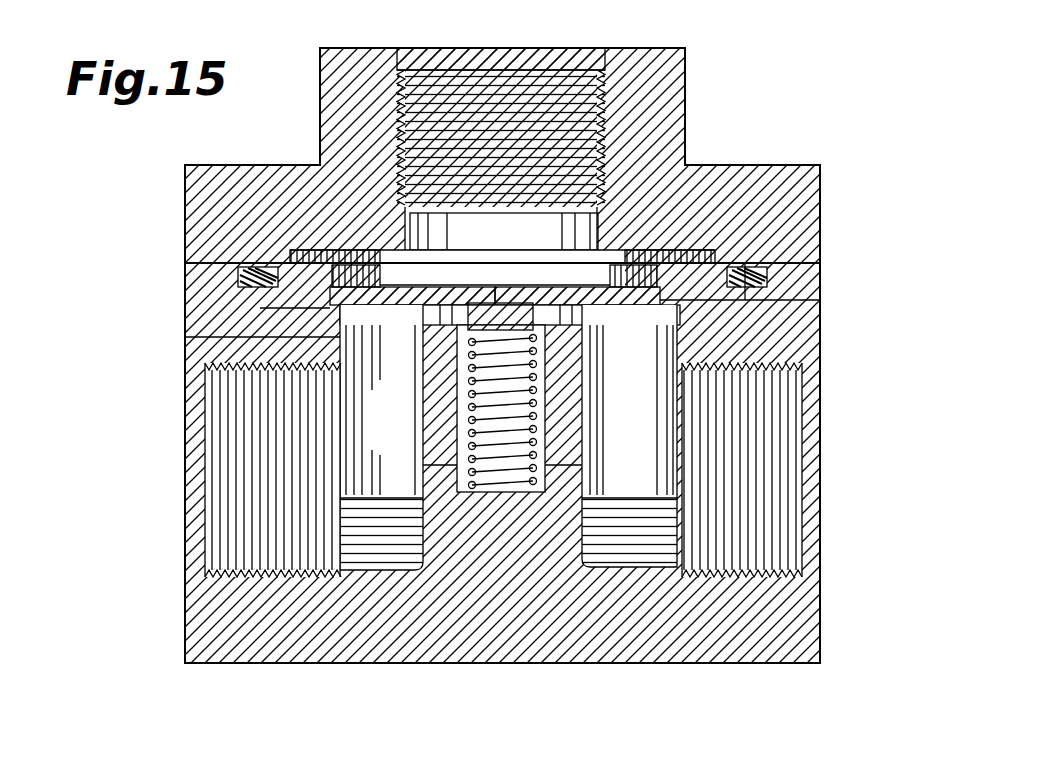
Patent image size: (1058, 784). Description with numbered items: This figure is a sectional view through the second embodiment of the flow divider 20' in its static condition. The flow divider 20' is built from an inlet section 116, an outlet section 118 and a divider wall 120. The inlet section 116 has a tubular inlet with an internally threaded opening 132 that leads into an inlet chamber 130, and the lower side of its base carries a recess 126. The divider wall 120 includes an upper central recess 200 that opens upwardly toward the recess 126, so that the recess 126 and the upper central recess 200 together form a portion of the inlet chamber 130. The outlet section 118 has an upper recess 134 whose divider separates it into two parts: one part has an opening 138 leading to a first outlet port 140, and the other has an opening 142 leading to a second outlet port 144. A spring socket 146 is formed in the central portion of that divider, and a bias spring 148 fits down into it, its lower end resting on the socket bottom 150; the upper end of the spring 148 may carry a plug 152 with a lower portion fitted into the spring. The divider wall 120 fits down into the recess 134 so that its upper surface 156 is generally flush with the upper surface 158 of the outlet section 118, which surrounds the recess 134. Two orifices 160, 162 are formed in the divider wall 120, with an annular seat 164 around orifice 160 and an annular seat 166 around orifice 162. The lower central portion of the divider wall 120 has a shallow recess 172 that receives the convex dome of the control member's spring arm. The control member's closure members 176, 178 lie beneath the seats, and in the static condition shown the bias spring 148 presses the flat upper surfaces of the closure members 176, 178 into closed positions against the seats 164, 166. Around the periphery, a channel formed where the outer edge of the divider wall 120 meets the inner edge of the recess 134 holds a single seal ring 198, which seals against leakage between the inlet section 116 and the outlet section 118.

The flow divider 20' is at (120, 405).
The inlet section 116 is at (805, 165).
The outlet section 118 is at (318, 666).
The divider wall 120 is at (330, 262).
The recess 126 is at (330, 262).
The inlet chamber 130 is at (437, 228).
The internally threaded opening 132 is at (485, 125).
The upper recess 134 is at (330, 305).
The opening 138 is at (268, 402).
The first outlet port 140 is at (245, 508).
The opening 142 is at (655, 345).
The second outlet port 144 is at (775, 500).
The spring socket 146 is at (545, 458).
The bias spring 148 is at (535, 425).
The socket bottom 150 is at (497, 456).
The plug 152 is at (470, 400).
The upper surface 156 is at (316, 262).
The upper surface 158 is at (215, 263).
The orifice 160 is at (372, 262).
The orifice 162 is at (612, 296).
The annular seat 164 is at (325, 338).
The annular seat 166 is at (690, 315).
The shallow recess 172 is at (440, 287).
The closure member 176 is at (343, 398).
The closure member 178 is at (612, 352).
The seal ring 198 is at (760, 248).
The upper central recess 200 is at (690, 163).